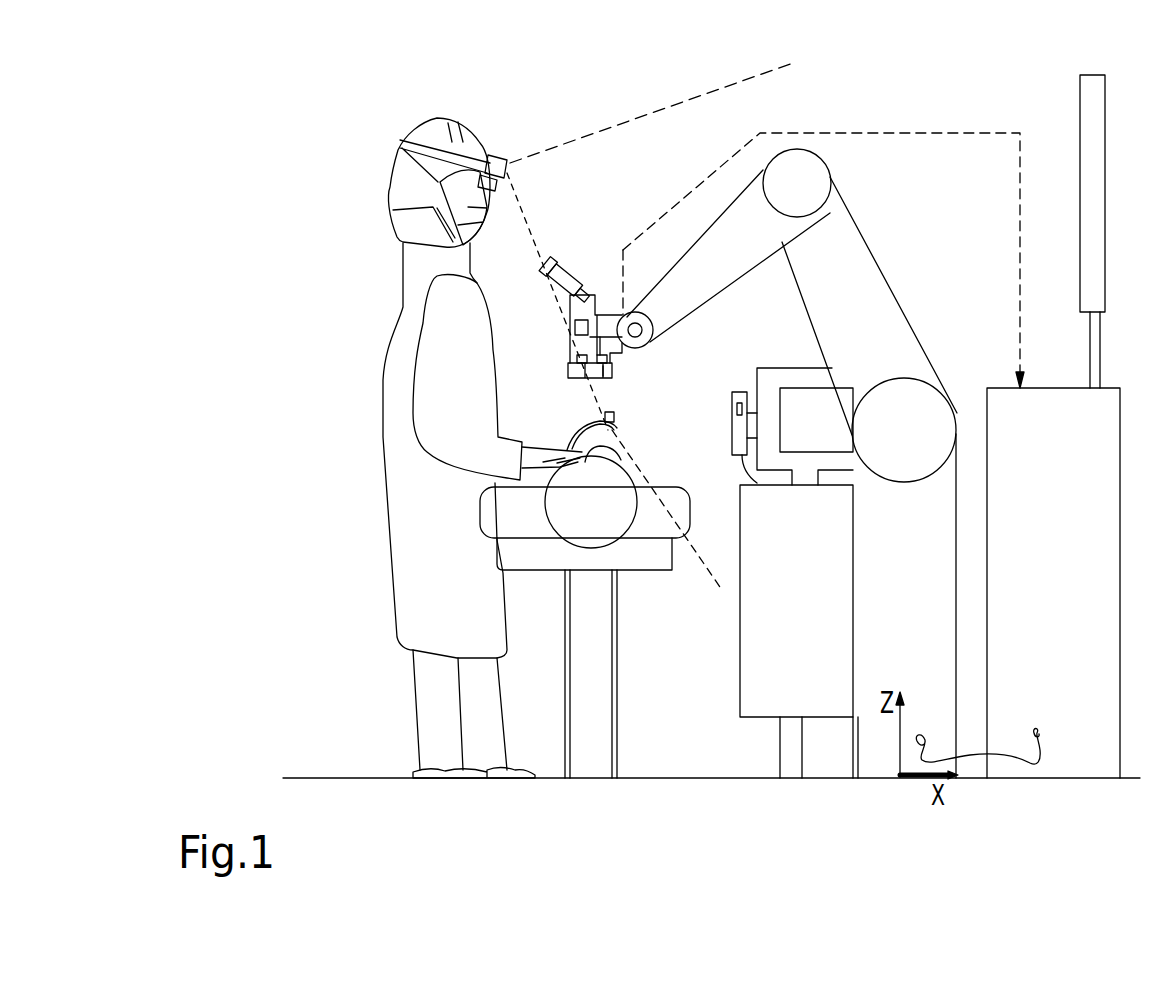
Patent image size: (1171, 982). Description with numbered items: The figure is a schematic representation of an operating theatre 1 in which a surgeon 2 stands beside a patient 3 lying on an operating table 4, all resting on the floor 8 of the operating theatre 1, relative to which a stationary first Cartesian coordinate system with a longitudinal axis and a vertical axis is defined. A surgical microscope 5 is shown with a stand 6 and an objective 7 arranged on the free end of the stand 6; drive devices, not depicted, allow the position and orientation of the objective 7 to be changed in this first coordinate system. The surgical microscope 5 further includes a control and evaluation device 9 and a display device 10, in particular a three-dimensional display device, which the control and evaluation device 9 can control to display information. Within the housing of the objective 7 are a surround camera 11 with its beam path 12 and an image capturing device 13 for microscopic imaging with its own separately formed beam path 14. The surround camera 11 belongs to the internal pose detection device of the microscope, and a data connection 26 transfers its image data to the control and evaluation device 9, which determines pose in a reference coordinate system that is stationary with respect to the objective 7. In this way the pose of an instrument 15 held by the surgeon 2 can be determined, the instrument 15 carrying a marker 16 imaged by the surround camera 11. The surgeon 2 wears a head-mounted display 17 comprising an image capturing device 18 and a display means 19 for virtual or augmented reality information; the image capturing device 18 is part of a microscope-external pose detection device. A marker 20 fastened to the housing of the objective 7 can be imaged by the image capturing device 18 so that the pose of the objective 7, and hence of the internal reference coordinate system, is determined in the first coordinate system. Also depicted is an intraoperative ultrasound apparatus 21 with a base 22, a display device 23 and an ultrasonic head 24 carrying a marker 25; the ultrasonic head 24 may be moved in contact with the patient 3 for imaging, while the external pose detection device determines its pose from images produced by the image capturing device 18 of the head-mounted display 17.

The operating theatre 1 is at (302, 684).
The surgeon 2 is at (385, 495).
The patient 3 is at (683, 498).
The operating table 4 is at (643, 555).
The surgical microscope 5 is at (863, 272).
The stand 6 is at (860, 228).
The objective 7 is at (606, 312).
The floor 8 is at (337, 778).
The control and evaluation device 9 is at (1052, 398).
The display device 10 is at (1105, 80).
The surround camera 11 is at (612, 366).
The beam path 12 is at (614, 375).
The image capturing device for microscopic imaging 13 is at (574, 362).
The beam path 14 is at (575, 380).
The instrument 15 is at (617, 428).
The marker 16 is at (614, 411).
The head-mounted display 17 is at (410, 137).
The image capturing device 18 is at (504, 158).
The display means 19 is at (497, 190).
The marker 20 is at (575, 328).
The ultrasound apparatus 21 is at (740, 689).
The base 22 is at (784, 660).
The display device 23 is at (787, 433).
The ultrasonic head 24 is at (738, 391).
The marker 25 is at (737, 407).
The data connection 26 is at (915, 131).